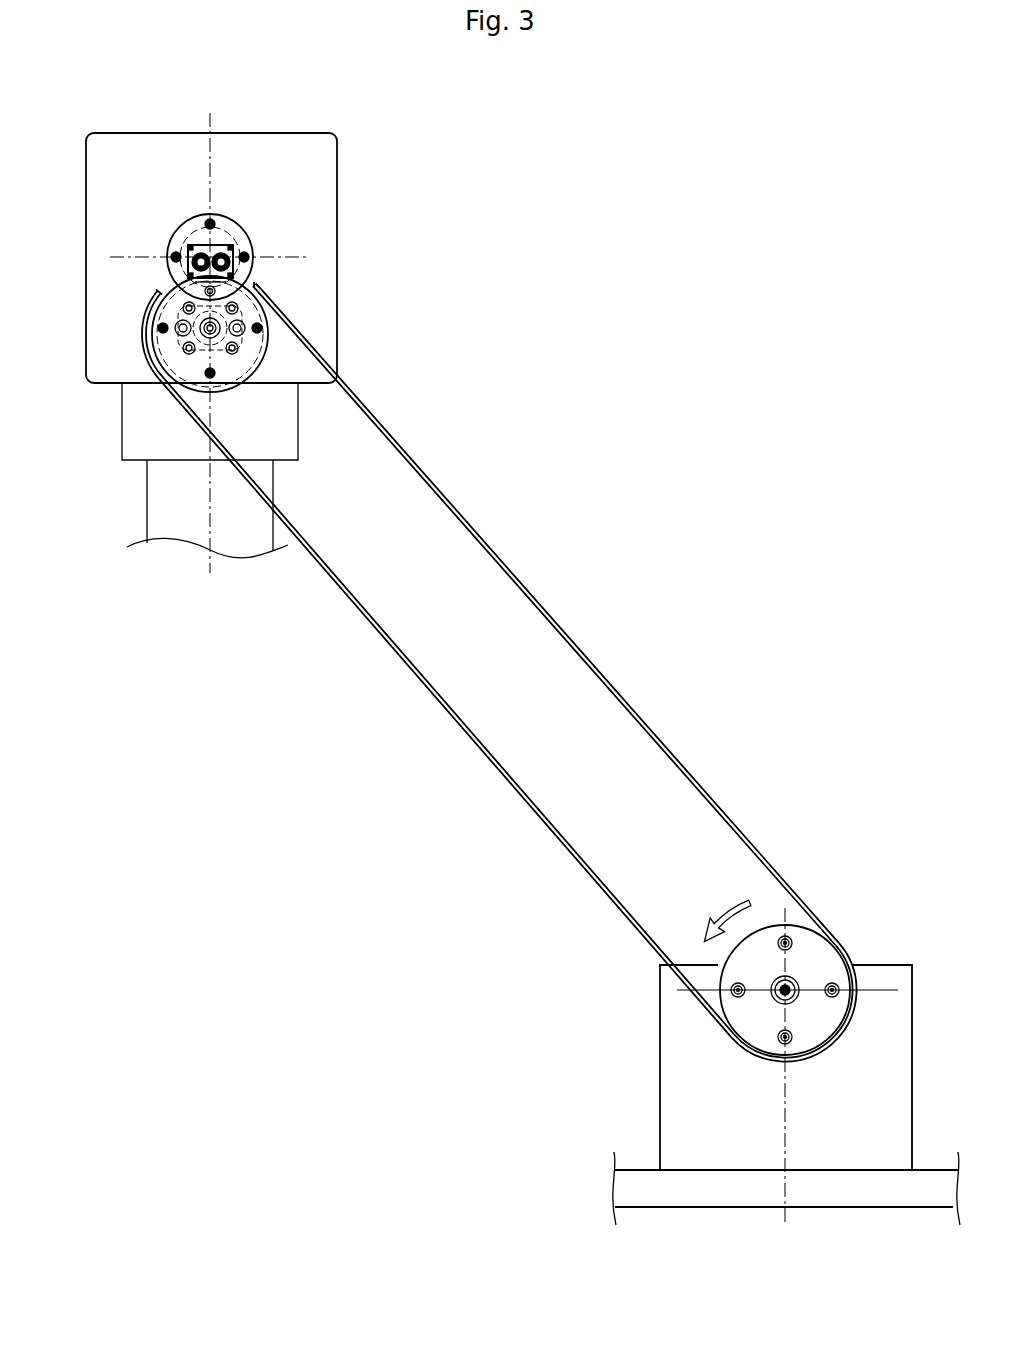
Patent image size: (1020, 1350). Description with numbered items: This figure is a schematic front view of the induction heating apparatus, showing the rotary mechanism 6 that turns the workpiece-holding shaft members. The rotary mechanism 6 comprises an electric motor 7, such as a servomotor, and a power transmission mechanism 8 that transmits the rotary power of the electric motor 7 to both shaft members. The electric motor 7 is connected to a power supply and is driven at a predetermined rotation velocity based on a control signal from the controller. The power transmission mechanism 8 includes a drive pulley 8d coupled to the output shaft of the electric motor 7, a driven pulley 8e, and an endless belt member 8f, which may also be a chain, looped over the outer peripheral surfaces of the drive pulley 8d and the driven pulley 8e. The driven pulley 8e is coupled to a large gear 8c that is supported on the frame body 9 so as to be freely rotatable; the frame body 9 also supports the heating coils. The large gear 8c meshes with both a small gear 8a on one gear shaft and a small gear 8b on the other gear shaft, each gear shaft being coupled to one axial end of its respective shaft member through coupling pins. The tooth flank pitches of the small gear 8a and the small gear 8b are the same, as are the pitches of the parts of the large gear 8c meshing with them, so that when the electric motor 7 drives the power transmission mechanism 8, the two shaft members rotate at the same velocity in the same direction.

The rotary mechanism 6 is at (579, 235).
The electric motor 7 is at (687, 1060).
The power transmission mechanism 8 is at (438, 372).
The small gear 8a is at (232, 250).
The small gear 8b is at (188, 252).
The large gear 8c is at (262, 350).
The drive pulley 8d is at (818, 958).
The driven pulley 8e is at (150, 338).
The endless belt member 8f is at (483, 541).
The frame body 9 is at (338, 174).